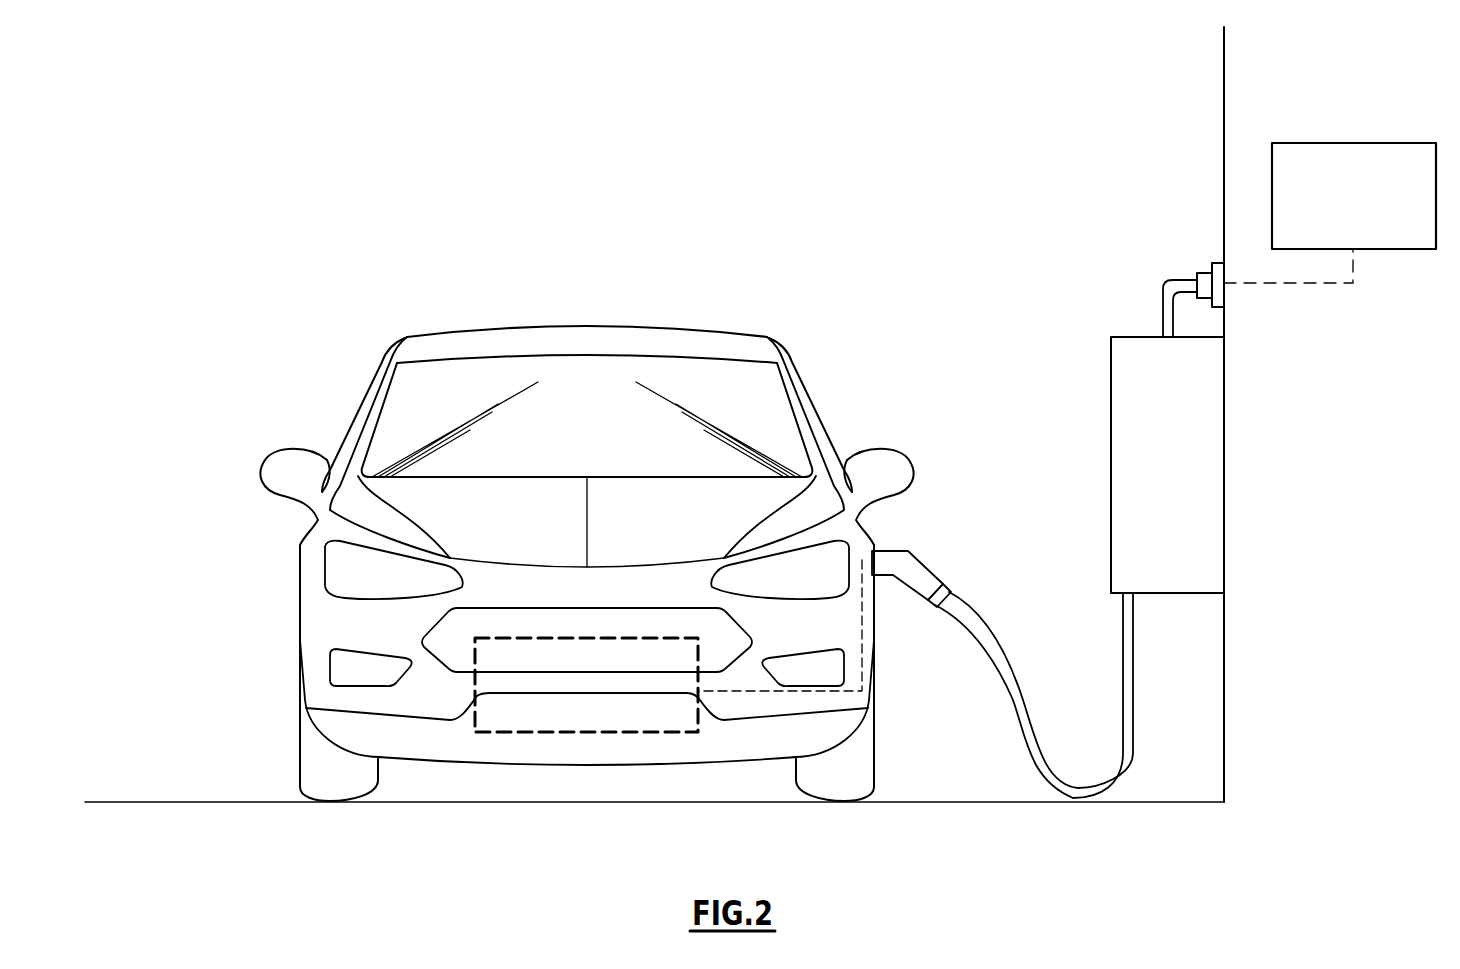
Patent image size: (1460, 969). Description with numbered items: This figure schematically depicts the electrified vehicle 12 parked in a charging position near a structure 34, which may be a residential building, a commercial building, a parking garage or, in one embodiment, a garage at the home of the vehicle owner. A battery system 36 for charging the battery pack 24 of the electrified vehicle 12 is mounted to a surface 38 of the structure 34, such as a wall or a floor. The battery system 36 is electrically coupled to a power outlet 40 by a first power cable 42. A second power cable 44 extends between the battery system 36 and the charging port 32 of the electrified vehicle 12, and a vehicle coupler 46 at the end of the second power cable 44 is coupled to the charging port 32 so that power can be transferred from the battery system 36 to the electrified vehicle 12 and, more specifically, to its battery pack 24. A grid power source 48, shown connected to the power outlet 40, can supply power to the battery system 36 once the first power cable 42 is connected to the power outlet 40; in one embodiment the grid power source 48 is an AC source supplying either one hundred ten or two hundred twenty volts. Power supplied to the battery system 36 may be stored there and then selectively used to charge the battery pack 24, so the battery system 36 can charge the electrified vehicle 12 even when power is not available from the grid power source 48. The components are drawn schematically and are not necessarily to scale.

The electrified vehicle 12 is at (588, 328).
The battery pack 24 is at (603, 733).
The charging port 32 is at (875, 528).
The structure 34 is at (1161, 407).
The battery system 36 is at (1111, 556).
The surface 38 is at (1220, 673).
The power outlet 40 is at (1216, 263).
The first power cable 42 is at (1165, 290).
The second power cable 44 is at (1020, 710).
The vehicle coupler 46 is at (912, 567).
The grid power source 48 is at (1407, 143).